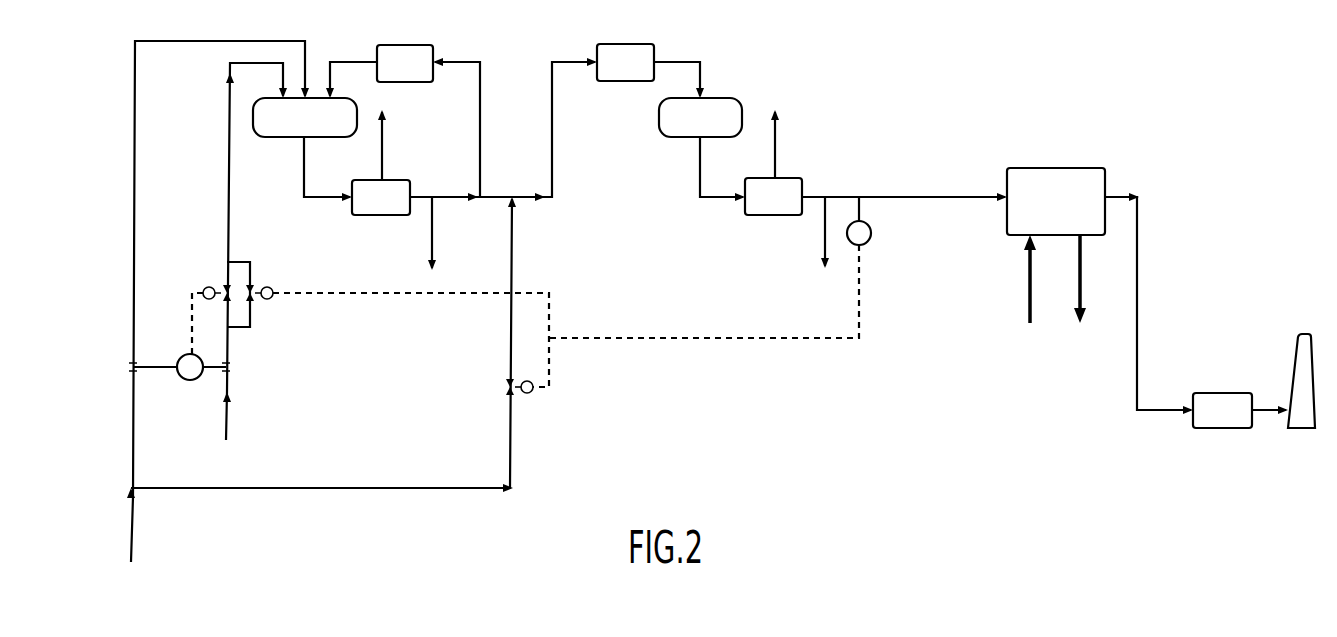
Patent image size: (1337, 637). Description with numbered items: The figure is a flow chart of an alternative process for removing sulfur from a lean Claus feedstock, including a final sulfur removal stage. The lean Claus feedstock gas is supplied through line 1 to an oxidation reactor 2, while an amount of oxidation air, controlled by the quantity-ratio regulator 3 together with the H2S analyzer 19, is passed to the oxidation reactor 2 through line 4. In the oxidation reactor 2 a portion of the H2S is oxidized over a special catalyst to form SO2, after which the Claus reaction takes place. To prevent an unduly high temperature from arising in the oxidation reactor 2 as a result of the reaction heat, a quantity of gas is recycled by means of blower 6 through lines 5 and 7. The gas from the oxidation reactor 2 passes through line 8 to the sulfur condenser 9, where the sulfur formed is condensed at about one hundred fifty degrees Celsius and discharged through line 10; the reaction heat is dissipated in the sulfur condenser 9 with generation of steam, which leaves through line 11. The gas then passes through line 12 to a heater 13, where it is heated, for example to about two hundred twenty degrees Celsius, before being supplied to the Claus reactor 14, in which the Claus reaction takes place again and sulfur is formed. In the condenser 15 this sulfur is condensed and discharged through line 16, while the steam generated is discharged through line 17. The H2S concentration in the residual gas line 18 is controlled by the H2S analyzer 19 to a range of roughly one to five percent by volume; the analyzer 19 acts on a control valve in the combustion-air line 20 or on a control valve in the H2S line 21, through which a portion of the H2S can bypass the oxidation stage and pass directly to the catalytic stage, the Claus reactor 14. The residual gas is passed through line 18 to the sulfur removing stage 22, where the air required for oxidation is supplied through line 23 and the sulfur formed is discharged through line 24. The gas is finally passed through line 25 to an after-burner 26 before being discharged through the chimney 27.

The feedstock supply line 1 is at (131, 534).
The oxidation reactor 2 is at (287, 120).
The quantity-ratio regulator 3 is at (191, 380).
The oxidation air line 4 is at (230, 170).
The recycle line 5 is at (480, 115).
The blower 6 is at (420, 58).
The recycle line 7 is at (349, 62).
The reactor outlet line 8 is at (304, 166).
The sulfur condenser 9 is at (383, 207).
The sulfur discharge line 10 is at (432, 222).
The steam discharge line 11 is at (382, 152).
The gas line to heater 12 is at (552, 117).
The heater 13 is at (641, 51).
The Claus reactor 14 is at (721, 108).
The sulfur condenser 15 is at (773, 205).
The sulfur discharge line 16 is at (825, 240).
The steam discharge line 17 is at (775, 152).
The residual gas line 18 is at (845, 197).
The H2S analyzer 19 is at (855, 248).
The combustion-air line 20 is at (250, 270).
The H2S bypass line 21 is at (512, 268).
The sulfur removing stage 22 is at (1050, 178).
The air supply line 23 is at (1020, 282).
The sulfur discharge line 24 is at (1082, 282).
The gas line to after-burner 25 is at (1137, 302).
The after-burner 26 is at (1220, 395).
The chimney 27 is at (1298, 369).